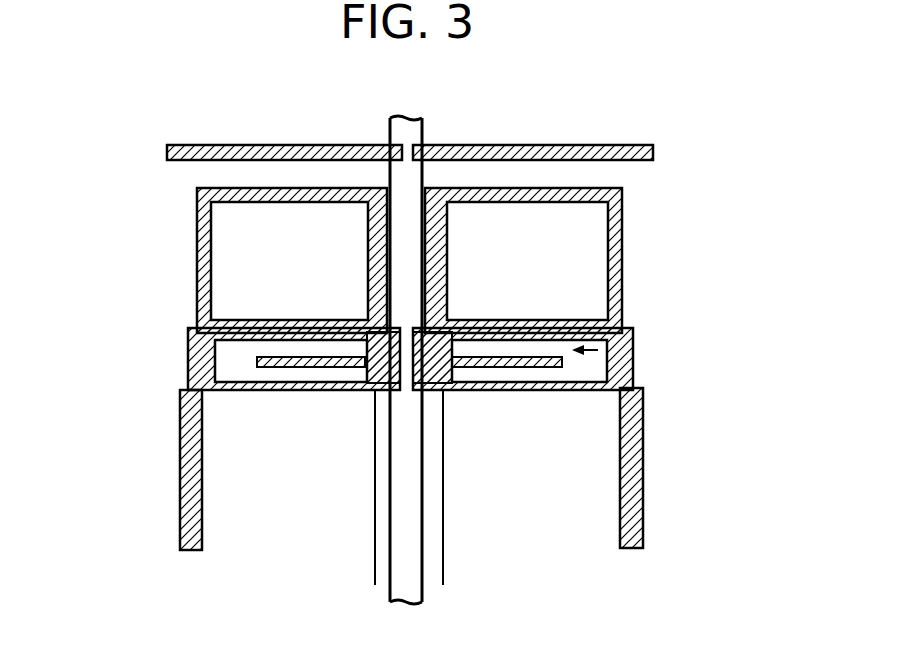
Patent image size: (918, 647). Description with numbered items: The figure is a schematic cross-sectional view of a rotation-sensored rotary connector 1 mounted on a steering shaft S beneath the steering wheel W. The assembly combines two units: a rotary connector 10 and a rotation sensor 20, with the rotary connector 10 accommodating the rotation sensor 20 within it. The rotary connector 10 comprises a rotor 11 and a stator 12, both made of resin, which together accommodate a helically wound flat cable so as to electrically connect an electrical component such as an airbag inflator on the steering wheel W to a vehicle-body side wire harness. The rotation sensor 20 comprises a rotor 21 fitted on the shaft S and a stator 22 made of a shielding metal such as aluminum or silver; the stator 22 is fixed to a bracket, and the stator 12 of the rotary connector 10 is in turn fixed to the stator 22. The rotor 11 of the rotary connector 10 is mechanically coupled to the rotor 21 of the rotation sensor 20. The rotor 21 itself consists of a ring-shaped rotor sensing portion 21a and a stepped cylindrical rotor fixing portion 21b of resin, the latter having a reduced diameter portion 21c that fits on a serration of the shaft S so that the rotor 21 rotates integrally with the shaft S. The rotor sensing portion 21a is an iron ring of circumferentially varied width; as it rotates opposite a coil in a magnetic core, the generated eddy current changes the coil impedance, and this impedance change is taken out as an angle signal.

The rotation-sensored rotary connector 1 is at (690, 240).
The shaft S is at (423, 118).
The steering wheel W is at (591, 145).
The rotary connector 10 is at (650, 205).
The rotor 11 is at (528, 202).
The stator 12 is at (197, 252).
The rotation sensor 20 is at (648, 353).
The rotor 21 is at (633, 335).
The rotor sensing portion 21a is at (548, 370).
The rotor fixing portion 21b is at (383, 393).
The reduced diameter portion 21c is at (412, 393).
The stator 22 is at (200, 350).